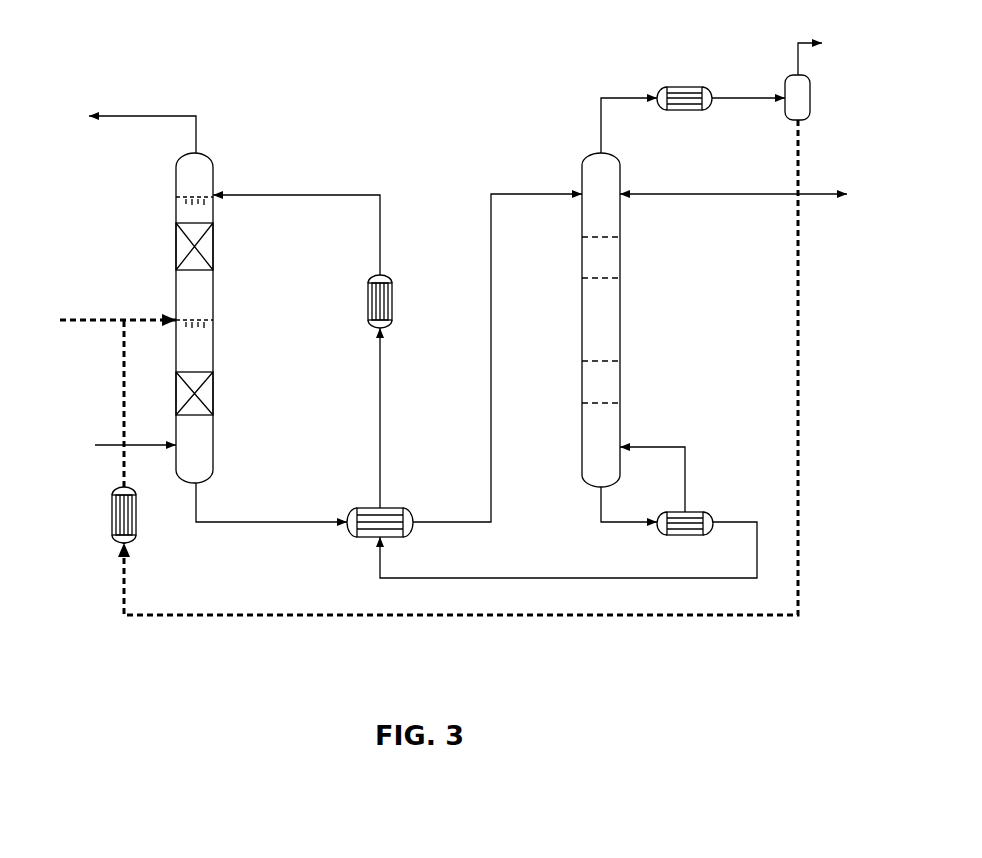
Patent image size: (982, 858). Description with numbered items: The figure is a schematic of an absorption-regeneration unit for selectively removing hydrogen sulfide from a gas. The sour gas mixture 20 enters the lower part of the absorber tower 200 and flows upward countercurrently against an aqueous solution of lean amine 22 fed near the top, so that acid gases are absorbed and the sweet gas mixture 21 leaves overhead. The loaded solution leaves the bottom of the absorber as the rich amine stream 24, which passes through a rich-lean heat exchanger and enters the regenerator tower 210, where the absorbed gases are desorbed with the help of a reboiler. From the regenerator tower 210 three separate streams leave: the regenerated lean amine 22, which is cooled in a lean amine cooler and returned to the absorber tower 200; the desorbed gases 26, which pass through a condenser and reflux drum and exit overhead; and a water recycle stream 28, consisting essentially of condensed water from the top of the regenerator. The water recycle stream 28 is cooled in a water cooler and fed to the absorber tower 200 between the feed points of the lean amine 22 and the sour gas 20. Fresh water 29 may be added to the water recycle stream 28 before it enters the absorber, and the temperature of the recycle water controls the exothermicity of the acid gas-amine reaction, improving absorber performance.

The sour gas mixture 20 is at (112, 445).
The sweet gas mixture 21 is at (119, 129).
The lean amine 22 is at (302, 187).
The rich amine stream 24 is at (285, 515).
The desorbed gases 26 is at (731, 93).
The water recycle stream 28 is at (807, 395).
The fresh water 29 is at (95, 319).
The absorber tower 200 is at (176, 240).
The regenerator tower 210 is at (623, 337).